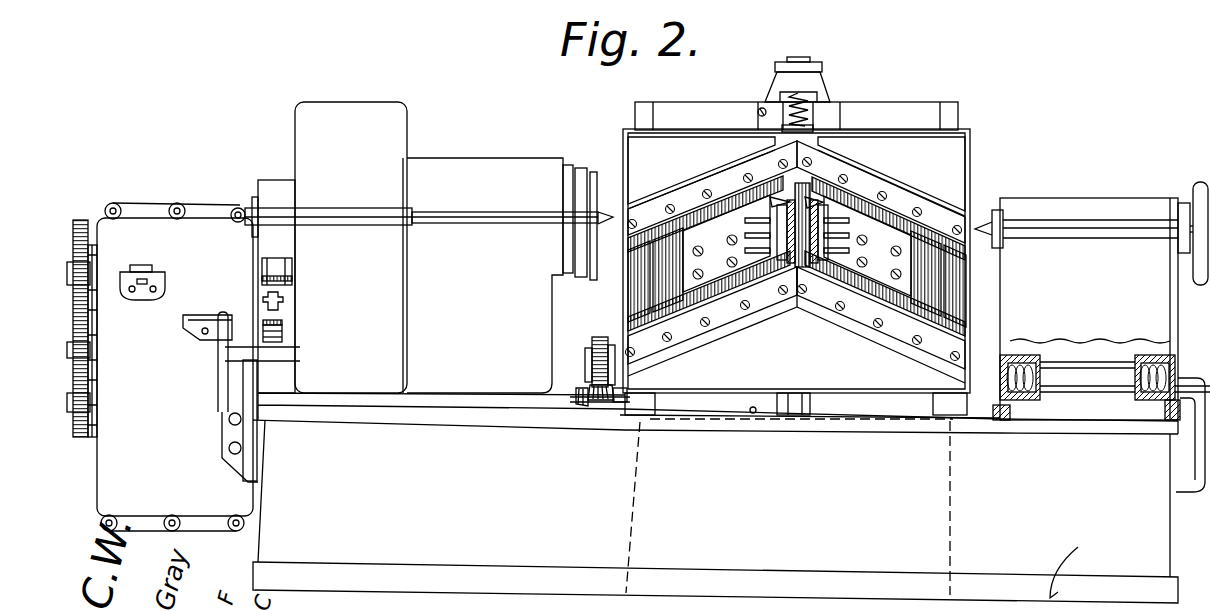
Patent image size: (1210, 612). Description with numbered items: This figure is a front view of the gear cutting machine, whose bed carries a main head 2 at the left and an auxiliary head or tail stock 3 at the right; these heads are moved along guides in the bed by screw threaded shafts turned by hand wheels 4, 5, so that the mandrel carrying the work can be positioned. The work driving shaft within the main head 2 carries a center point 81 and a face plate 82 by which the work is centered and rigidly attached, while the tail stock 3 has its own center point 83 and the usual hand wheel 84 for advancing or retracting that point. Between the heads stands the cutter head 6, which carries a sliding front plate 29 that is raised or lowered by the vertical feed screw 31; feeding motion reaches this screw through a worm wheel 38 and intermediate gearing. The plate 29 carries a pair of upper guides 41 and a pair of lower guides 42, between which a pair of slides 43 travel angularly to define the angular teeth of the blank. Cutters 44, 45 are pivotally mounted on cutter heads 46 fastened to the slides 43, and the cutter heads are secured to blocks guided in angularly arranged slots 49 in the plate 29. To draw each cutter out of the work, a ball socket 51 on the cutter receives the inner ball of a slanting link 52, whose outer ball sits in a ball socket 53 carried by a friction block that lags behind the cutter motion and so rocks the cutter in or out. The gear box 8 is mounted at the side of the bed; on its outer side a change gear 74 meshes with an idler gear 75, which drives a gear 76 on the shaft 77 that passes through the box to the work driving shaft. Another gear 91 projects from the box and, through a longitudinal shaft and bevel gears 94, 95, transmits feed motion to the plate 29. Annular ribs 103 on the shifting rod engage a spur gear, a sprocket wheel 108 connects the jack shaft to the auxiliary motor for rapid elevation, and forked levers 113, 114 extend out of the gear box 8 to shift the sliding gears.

The main head 2 is at (476, 153).
The tail stock 3 is at (1112, 192).
The hand wheel 4 is at (214, 381).
The hand wheel 5 is at (1190, 445).
The cutter head 6 is at (712, 100).
The gear box 8 is at (207, 238).
The sliding front plate 29 is at (968, 133).
The vertical feed screw 31 is at (807, 118).
The worm wheel 38 is at (600, 337).
The upper guides 41 is at (735, 182).
The lower guides 42 is at (827, 298).
The slides 43 is at (718, 294).
The cutter 44 is at (818, 200).
The cutter 45 is at (787, 195).
The cutter heads 46 is at (715, 222).
The angularly arranged slots 49 is at (655, 300).
The ball socket 51 is at (835, 197).
The link 52 is at (905, 190).
The ball socket 53 is at (960, 250).
The change gear 74 is at (80, 432).
The idler gear 75 is at (84, 346).
The gear 76 is at (99, 312).
The shaft 77 is at (278, 262).
The center point 81 is at (612, 208).
The face plate 82 is at (590, 168).
The center point 83 is at (979, 222).
The hand wheel 84 is at (1200, 185).
The gear 91 is at (292, 340).
The bevel gear 94 is at (583, 403).
The bevel gear 95 is at (614, 402).
The annular ribs 103 is at (295, 320).
The sprocket wheel 108 is at (290, 302).
The forked lever 113 is at (208, 316).
The forked lever 114 is at (150, 277).